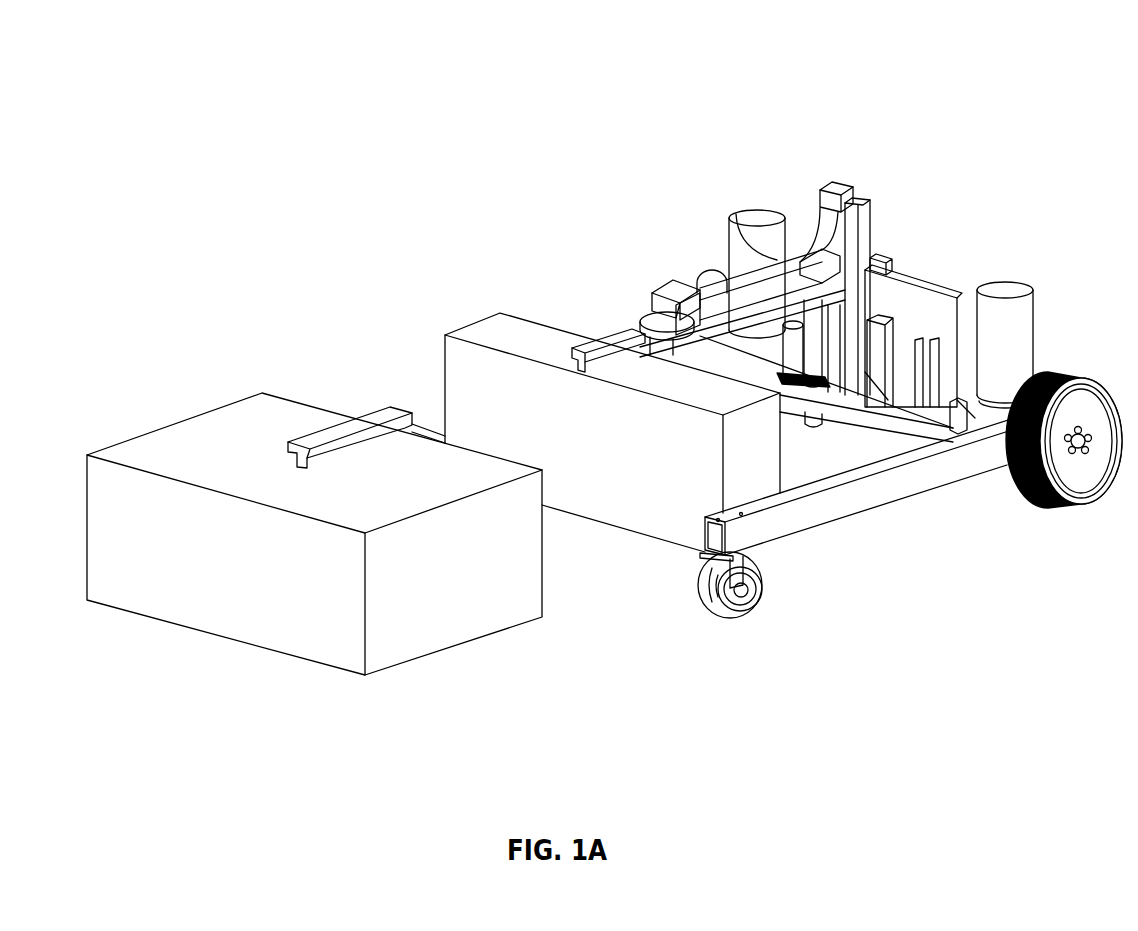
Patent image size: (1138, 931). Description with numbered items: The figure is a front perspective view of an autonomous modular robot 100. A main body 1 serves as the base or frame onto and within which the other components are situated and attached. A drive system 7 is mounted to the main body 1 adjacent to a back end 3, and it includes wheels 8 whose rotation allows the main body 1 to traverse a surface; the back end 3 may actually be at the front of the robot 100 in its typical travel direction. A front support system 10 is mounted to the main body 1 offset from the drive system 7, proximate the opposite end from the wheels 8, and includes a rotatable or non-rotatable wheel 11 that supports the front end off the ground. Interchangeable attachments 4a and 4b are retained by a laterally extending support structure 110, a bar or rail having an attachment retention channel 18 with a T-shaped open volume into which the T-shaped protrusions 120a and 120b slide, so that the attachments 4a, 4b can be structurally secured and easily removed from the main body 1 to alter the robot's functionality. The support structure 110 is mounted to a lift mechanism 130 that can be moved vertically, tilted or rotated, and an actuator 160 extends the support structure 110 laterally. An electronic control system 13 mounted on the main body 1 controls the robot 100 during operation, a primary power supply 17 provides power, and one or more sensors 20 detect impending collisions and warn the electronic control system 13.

The autonomous modular robot 100 is at (299, 61).
The interchangeable attachment 4b is at (138, 436).
The protrusion 120b is at (373, 410).
The interchangeable attachment 4a is at (470, 320).
The protrusion 120a is at (615, 330).
The main body 1 is at (893, 497).
The front support system 10 is at (682, 591).
The wheel 11 is at (745, 613).
The wheels 8 is at (1086, 375).
The laterally extending support structure 110 is at (735, 213).
The sensors 20 is at (851, 183).
The lift mechanism 130 is at (830, 228).
The primary power supply 17 is at (880, 258).
The actuator 160 is at (697, 280).
The attachment retention channel 18 is at (672, 287).
The back end 3 is at (1031, 255).
The electronic control system 13 is at (927, 282).
The drive system 7 is at (1035, 318).